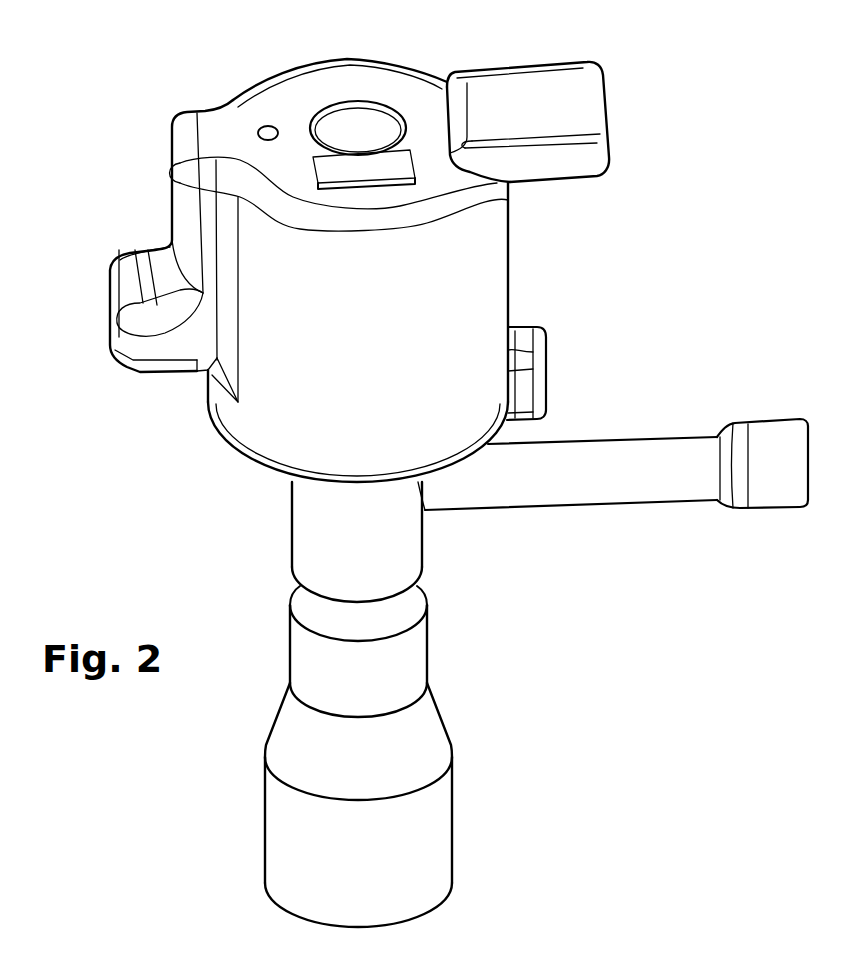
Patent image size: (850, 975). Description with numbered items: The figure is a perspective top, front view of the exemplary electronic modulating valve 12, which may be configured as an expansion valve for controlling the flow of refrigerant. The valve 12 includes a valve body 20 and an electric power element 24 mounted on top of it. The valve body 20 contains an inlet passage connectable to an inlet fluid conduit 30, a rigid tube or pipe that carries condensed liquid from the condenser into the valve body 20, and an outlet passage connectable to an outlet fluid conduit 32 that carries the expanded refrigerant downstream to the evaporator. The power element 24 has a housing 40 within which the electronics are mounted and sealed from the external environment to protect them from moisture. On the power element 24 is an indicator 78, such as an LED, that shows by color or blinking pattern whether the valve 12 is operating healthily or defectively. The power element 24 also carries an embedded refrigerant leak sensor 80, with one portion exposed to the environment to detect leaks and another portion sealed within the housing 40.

The electronic modulating valve 12 is at (104, 88).
The valve body 20 is at (274, 510).
The electric power element 24 is at (440, 52).
The inlet fluid conduit 30 is at (617, 458).
The outlet fluid conduit 32 is at (443, 713).
The housing 40 is at (483, 282).
The indicator 78 is at (262, 128).
The refrigerant leak sensor 80 is at (360, 155).